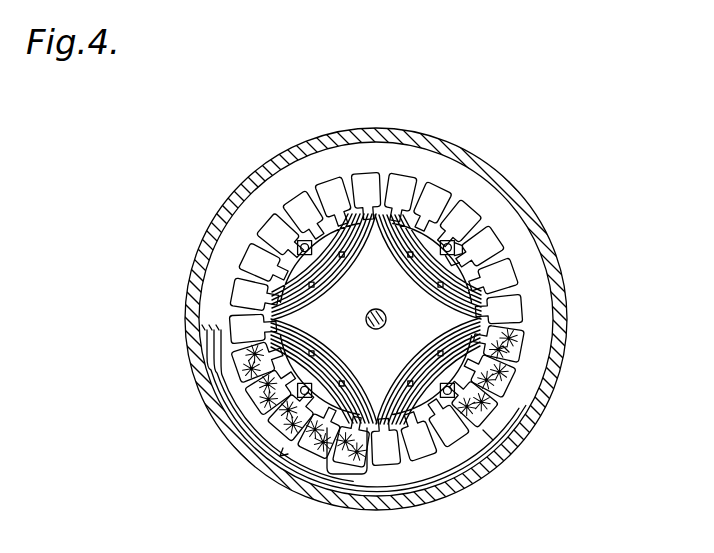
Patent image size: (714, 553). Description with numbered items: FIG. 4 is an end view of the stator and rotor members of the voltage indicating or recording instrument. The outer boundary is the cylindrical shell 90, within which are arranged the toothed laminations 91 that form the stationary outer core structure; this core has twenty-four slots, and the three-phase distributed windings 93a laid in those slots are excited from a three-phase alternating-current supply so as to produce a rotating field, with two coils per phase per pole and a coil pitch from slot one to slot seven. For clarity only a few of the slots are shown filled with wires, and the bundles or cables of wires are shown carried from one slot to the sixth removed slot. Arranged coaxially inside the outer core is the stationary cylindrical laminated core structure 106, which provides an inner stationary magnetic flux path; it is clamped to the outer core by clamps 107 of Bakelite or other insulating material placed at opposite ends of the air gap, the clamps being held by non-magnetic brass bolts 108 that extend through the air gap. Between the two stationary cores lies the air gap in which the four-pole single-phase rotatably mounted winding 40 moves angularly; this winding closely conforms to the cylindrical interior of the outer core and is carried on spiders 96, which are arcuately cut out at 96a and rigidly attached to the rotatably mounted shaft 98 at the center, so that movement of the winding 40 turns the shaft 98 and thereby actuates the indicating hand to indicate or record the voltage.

The cylindrical shell 90 is at (522, 205).
The toothed laminations 91 is at (538, 288).
The distributed windings 93a is at (609, 322).
The four-pole single-phase rotatably mounted winding 40 is at (518, 325).
The spider 96 is at (268, 306).
The arcuate cut-out 96a is at (316, 274).
The shaft 98 is at (368, 329).
The cylindrical laminated core structure 106 is at (432, 242).
The clamps 107 is at (456, 262).
The bolts 108 is at (460, 247).